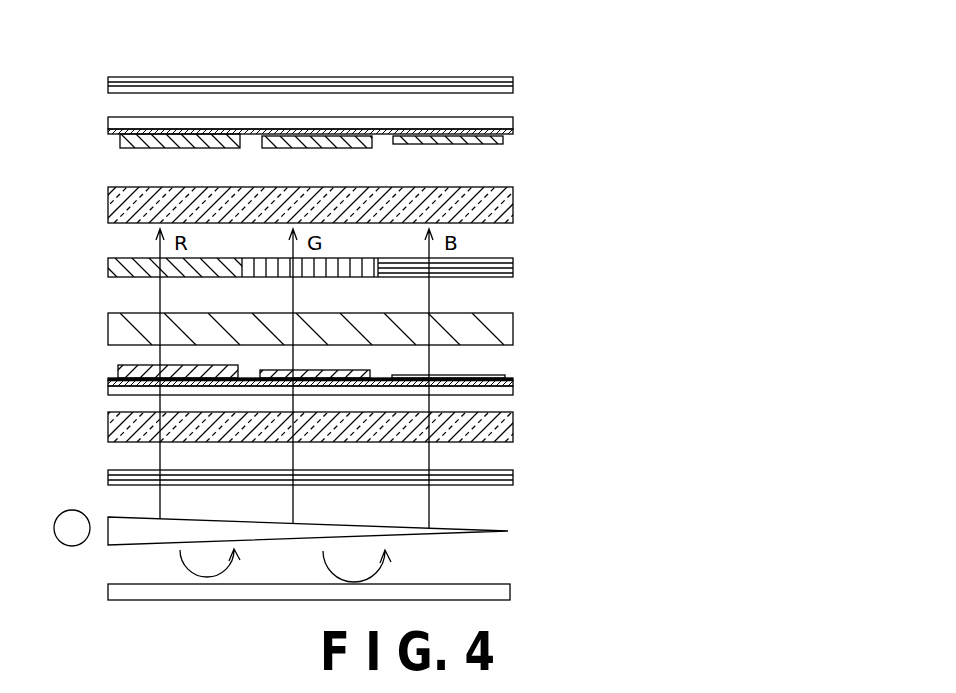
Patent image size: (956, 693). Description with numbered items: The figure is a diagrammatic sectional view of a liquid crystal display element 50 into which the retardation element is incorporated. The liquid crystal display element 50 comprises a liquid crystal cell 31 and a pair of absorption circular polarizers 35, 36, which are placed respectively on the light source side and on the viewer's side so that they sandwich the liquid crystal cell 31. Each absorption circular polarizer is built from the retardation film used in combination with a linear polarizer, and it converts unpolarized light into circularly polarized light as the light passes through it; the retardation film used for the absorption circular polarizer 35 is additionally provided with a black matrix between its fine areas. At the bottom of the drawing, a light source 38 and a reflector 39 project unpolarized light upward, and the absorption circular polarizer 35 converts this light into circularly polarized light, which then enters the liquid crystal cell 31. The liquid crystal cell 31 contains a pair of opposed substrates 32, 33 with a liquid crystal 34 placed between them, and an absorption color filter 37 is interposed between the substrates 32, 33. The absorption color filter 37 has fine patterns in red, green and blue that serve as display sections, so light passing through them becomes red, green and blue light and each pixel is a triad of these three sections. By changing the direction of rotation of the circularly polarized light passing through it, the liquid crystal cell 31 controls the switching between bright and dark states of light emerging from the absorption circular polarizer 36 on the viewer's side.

The liquid crystal display element 50 is at (533, 66).
The absorption circular polarizer 36 is at (381, 112).
The liquid crystal cell 31 is at (393, 314).
The substrate 33 is at (508, 204).
The absorption color filter 37 is at (513, 266).
The liquid crystal 34 is at (500, 325).
The substrate 32 is at (500, 432).
The absorption circular polarizer 35 is at (382, 432).
The light source 38 is at (508, 532).
The reflector 39 is at (510, 592).